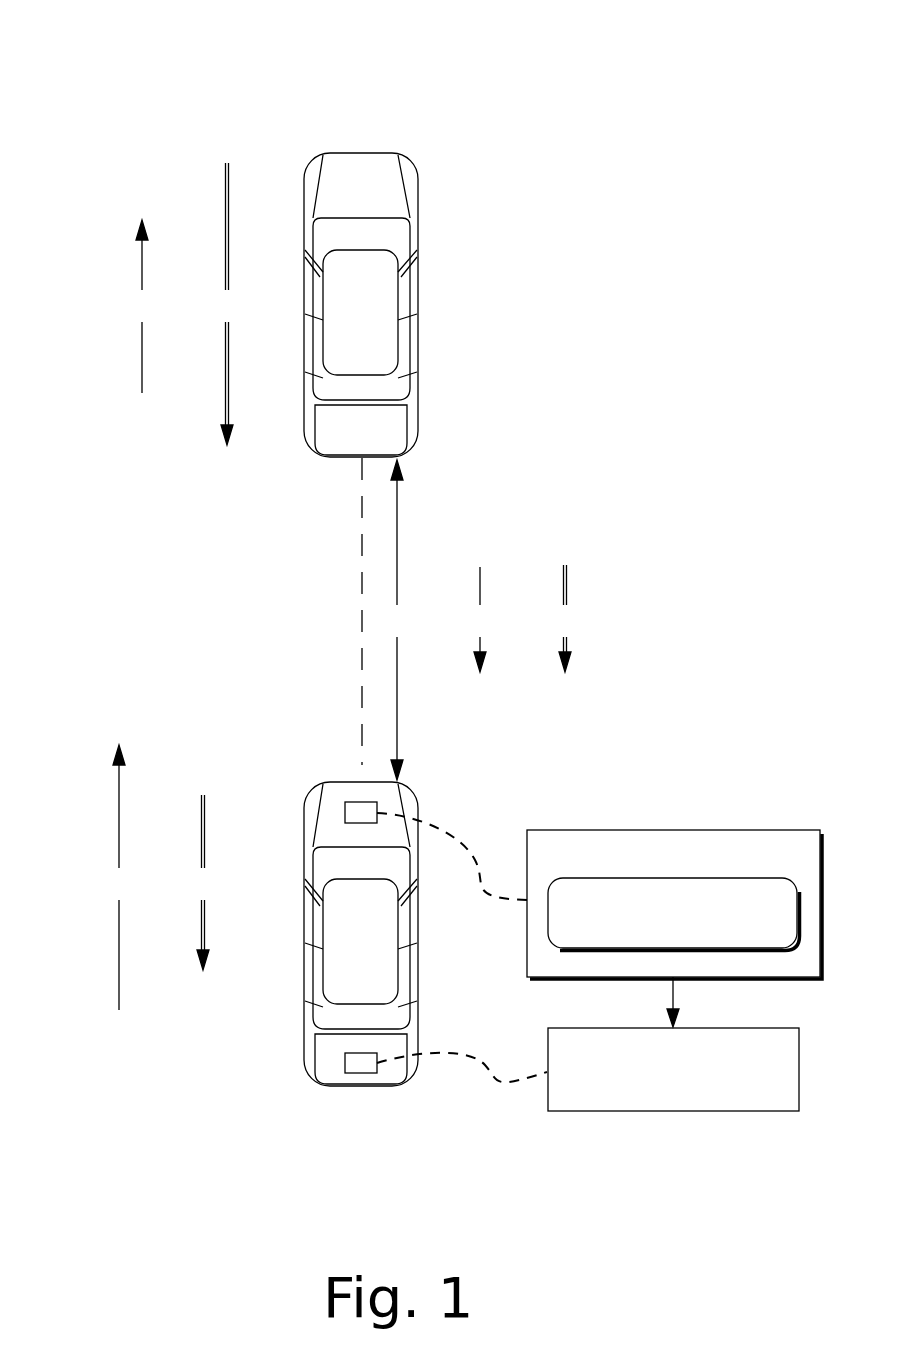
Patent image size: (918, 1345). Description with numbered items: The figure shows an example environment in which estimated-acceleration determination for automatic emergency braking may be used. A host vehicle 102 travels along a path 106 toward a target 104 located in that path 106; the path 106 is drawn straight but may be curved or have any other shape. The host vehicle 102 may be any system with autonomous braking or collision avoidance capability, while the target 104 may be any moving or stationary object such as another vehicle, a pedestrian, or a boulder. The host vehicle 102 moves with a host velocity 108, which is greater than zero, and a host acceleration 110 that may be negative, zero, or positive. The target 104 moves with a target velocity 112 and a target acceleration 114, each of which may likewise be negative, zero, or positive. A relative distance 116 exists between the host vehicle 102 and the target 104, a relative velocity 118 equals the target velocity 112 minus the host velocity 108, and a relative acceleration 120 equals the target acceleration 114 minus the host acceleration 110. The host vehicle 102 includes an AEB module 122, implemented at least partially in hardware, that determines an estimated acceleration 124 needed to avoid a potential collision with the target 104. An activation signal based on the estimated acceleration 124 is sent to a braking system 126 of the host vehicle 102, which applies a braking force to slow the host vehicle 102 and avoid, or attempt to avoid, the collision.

The host vehicle 102 is at (412, 787).
The target 104 is at (412, 160).
The path 106 is at (361, 558).
The host velocity 108 is at (119, 877).
The host acceleration 110 is at (203, 882).
The target velocity 112 is at (142, 306).
The target acceleration 114 is at (227, 304).
The relative distance 116 is at (397, 620).
The relative velocity 118 is at (480, 619).
The relative acceleration 120 is at (565, 618).
The AEB module 122 is at (599, 920).
The estimated acceleration 124 is at (673, 914).
The braking system 126 is at (588, 1069).